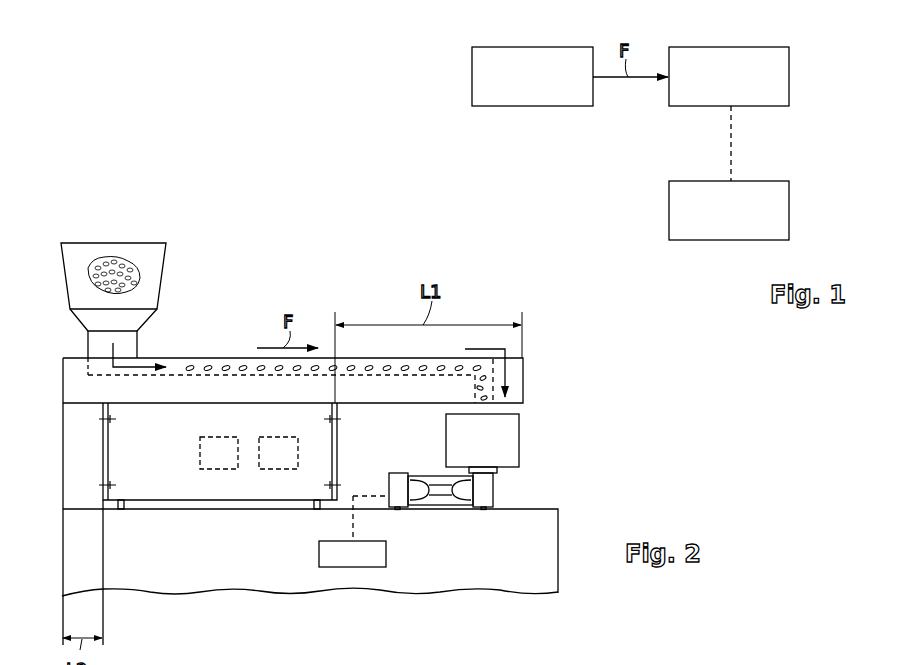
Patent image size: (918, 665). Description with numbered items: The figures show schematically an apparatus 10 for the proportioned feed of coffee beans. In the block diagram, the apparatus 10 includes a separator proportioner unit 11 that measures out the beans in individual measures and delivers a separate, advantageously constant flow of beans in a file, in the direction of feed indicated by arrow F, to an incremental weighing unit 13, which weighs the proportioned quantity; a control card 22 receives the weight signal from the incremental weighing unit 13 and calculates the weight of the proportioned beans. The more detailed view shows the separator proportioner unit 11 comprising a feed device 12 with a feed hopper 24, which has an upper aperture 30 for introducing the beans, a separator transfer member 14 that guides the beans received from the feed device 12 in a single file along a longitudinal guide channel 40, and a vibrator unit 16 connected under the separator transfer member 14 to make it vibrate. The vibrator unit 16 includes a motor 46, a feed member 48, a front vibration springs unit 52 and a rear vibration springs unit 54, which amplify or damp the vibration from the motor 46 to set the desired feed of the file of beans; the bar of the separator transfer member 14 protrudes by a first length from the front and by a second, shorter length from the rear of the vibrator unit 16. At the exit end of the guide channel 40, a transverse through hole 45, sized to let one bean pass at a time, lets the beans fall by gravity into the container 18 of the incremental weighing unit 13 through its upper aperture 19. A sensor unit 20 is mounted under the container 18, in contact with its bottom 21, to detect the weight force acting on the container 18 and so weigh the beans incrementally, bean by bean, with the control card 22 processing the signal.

In FIG. 1, the apparatus 10 is at (596, 159).
In FIG. 1, the separator proportioner unit 11 is at (486, 75).
In FIG. 2, the separator proportioner unit 11 is at (230, 328).
In FIG. 2, the feed device 12 is at (171, 316).
In FIG. 1, the incremental weighing unit 13 is at (762, 61).
In FIG. 2, the incremental weighing unit 13 is at (528, 473).
In FIG. 2, the separator transfer member 14 is at (76, 381).
In FIG. 2, the vibrator unit 16 is at (118, 467).
In FIG. 2, the container 18 is at (505, 440).
In FIG. 2, the upper aperture 19 is at (517, 414).
In FIG. 2, the sensor unit 20 is at (430, 462).
In FIG. 2, the bottom 21 is at (507, 468).
In FIG. 1, the control card 22 is at (693, 228).
In FIG. 2, the control card 22 is at (371, 553).
In FIG. 2, the feed hopper 24 is at (78, 251).
In FIG. 2, the upper aperture 30 is at (310, 582).
In FIG. 2, the longitudinal guide channel 40 is at (380, 371).
In FIG. 2, the transverse through hole 45 is at (490, 378).
In FIG. 2, the motor 46 is at (282, 457).
In FIG. 2, the feed member 48 is at (214, 457).
In FIG. 2, the front vibration springs unit 52 is at (337, 450).
In FIG. 2, the rear vibration springs unit 54 is at (105, 443).